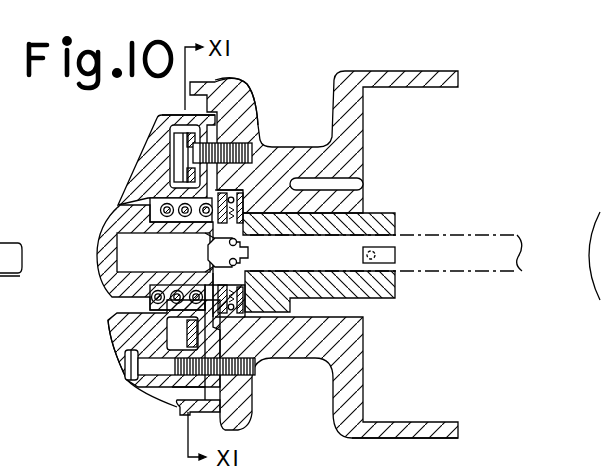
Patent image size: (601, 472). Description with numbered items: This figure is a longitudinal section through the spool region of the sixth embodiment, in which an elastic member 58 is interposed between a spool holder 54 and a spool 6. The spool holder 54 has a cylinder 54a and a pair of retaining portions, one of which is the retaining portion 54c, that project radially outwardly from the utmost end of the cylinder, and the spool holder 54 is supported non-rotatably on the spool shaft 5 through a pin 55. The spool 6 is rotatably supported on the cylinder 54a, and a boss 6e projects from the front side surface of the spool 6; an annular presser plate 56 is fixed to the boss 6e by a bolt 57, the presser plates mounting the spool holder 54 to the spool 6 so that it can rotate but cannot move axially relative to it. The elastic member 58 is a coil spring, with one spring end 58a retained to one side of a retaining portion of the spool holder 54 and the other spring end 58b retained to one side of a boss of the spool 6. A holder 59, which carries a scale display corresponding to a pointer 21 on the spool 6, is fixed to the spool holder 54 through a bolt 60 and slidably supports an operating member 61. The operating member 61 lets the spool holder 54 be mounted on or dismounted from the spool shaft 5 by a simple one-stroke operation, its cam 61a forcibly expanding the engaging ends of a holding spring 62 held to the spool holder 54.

The spool shaft 5 is at (0, 240).
The spool 6 is at (430, 64).
The boss 6e is at (233, 110).
The pointer 21 is at (405, 455).
The spool holder 54 is at (400, 206).
The cylinder 54a is at (395, 206).
The retaining portion 54c is at (180, 388).
The pin 55 is at (378, 250).
The annular presser plate 56 is at (232, 78).
The bolt 57 is at (230, 140).
The elastic member 58 is at (140, 167).
The spring end 58a is at (245, 140).
The spring end 58b is at (130, 330).
The holder 59 is at (112, 323).
The bolt 60 is at (122, 366).
The operating member 61 is at (100, 253).
The cam 61a is at (240, 246).
The holding spring 62 is at (234, 266).